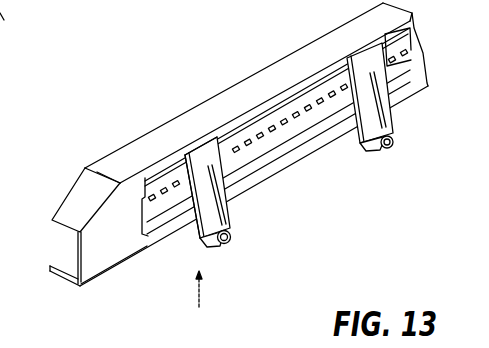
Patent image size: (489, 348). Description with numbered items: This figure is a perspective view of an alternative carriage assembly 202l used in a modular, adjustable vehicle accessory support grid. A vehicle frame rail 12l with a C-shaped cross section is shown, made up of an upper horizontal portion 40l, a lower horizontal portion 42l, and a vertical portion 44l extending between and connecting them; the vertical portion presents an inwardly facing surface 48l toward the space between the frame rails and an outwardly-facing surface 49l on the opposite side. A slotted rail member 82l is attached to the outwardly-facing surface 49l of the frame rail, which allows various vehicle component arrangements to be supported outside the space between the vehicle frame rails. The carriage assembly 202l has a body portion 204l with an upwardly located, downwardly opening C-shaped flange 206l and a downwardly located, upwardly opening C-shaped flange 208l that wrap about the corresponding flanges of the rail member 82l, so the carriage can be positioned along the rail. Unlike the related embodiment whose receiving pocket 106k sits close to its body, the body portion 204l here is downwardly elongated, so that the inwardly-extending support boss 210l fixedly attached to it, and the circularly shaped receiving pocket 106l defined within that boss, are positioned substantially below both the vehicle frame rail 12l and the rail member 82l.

The vehicle frame rail 12l is at (133, 141).
The upper horizontal portion 40l is at (183, 128).
The lower horizontal portion 42l is at (67, 272).
The vertical portion 44l is at (92, 262).
The inwardly facing surface 48l is at (77, 250).
The outwardly-facing surface 49l is at (98, 218).
The rail member 82l is at (293, 98).
The receiving pocket 106l is at (232, 178).
The receiving pocket 106k is at (20, 20).
The carriage assembly 202l is at (197, 305).
The body portion 204l is at (222, 173).
The C-shaped flange 206l is at (214, 136).
The C-shaped flange 208l is at (185, 222).
The support boss 210l is at (231, 233).